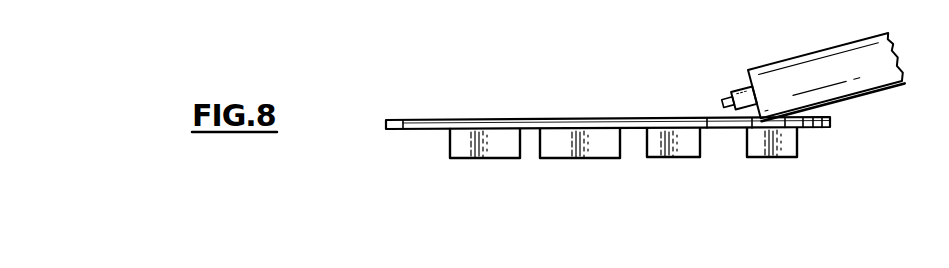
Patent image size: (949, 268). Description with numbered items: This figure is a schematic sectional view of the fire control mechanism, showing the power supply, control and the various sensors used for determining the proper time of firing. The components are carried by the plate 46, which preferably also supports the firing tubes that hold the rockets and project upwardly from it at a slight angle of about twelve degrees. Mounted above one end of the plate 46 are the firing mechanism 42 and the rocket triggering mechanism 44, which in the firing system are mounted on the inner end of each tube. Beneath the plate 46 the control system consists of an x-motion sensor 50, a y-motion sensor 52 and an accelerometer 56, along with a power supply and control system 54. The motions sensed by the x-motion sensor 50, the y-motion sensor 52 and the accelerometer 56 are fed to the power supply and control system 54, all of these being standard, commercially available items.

The firing mechanism 42 is at (743, 88).
The rocket triggering mechanism 44 is at (729, 96).
The plate 46 is at (413, 121).
The x-motion sensor 50 is at (798, 144).
The y-motion sensor 52 is at (701, 150).
The power supply and control system 54 is at (577, 158).
The accelerometer 56 is at (448, 147).